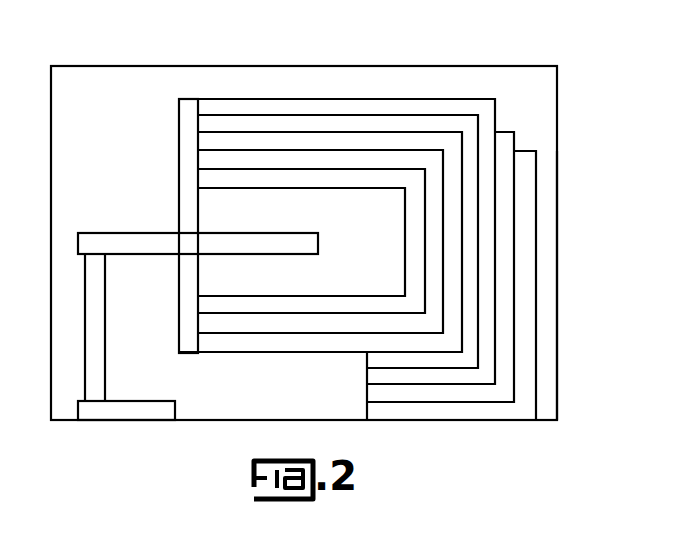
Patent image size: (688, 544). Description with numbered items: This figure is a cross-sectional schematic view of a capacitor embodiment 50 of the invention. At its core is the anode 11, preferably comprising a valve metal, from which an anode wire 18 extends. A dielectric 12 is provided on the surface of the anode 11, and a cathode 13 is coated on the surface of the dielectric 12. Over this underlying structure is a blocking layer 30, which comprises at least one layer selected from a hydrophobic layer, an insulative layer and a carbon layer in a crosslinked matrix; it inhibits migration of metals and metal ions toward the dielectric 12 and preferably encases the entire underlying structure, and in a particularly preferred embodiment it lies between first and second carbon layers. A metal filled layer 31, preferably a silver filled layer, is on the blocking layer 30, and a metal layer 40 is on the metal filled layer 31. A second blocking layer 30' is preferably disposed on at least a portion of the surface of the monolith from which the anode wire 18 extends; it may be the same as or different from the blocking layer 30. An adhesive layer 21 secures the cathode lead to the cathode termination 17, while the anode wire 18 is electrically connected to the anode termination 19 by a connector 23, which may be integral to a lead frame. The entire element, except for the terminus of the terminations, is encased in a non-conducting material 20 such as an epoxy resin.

The anode 11 is at (263, 212).
The dielectric layer 12 is at (333, 180).
The cathode layer 13 is at (365, 161).
The cathode terminal 17 is at (527, 339).
The anode wire 18 is at (97, 238).
The anode terminal 19 is at (80, 420).
The non-conducting material 20 is at (545, 265).
The adhesive layer 21 is at (507, 310).
The connector 23 is at (89, 317).
The blocking layer 30 is at (385, 242).
The second blocking layer 30' is at (166, 193).
The metal filled layer 31 is at (473, 227).
The metal layer 40 is at (490, 252).
The capacitor embodiment 50 is at (577, 433).